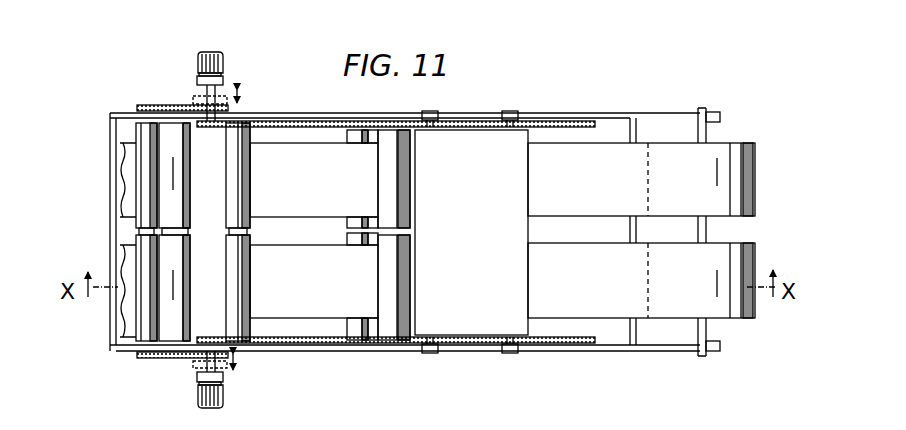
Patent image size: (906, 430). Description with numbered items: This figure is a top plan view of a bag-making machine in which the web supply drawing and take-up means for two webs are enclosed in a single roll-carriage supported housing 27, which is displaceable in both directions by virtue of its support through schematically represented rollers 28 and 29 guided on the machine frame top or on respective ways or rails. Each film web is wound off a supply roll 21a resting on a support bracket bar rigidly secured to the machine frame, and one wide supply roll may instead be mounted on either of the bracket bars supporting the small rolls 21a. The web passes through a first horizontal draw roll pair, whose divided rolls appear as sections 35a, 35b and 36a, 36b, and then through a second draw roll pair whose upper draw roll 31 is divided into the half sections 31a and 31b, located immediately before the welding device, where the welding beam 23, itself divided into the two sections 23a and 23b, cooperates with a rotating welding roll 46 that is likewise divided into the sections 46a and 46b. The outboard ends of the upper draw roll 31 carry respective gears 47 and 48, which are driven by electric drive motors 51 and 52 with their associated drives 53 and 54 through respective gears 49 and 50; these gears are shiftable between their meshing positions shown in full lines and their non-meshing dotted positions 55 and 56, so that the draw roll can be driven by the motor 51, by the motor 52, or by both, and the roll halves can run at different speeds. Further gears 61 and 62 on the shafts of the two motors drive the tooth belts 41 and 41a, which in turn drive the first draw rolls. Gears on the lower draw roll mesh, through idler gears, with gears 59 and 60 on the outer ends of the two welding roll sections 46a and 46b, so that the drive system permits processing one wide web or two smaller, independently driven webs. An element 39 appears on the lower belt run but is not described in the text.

The supply roll 21a is at (742, 167).
The welding beam 23 is at (135, 272).
The welding beam section 23a is at (143, 143).
The welding beam section 23b is at (147, 328).
The housing 27 is at (468, 305).
The roller 28 is at (430, 353).
The roller 29 is at (513, 353).
The upper draw roll 31 is at (181, 171).
The upper draw roll section 31a is at (178, 212).
The upper draw roll section 31b is at (180, 267).
The first draw roll section 35a is at (355, 243).
The first draw roll section 35b is at (355, 218).
The first draw roll section 36a is at (387, 174).
The first draw roll section 36b is at (387, 278).
The chain connection 39 is at (581, 348).
The tooth belt 41 is at (317, 121).
The tooth belt 41a is at (336, 352).
The welding roll 46 is at (135, 200).
The welding roll section 46a is at (137, 172).
The welding roll section 46b is at (137, 312).
The gear 47 is at (167, 107).
The gear 48 is at (175, 358).
The shiftable gear 49 is at (203, 122).
The shiftable gear 50 is at (235, 352).
The electric drive motor 51 is at (201, 52).
The electric drive motor 52 is at (201, 406).
The drive 53 is at (200, 63).
The drive 54 is at (200, 378).
The non-meshing position 55 is at (227, 369).
The non-meshing position 56 is at (192, 99).
The gear 59 is at (140, 106).
The gear 60 is at (142, 358).
The gear 61 is at (237, 88).
The gear 62 is at (212, 339).